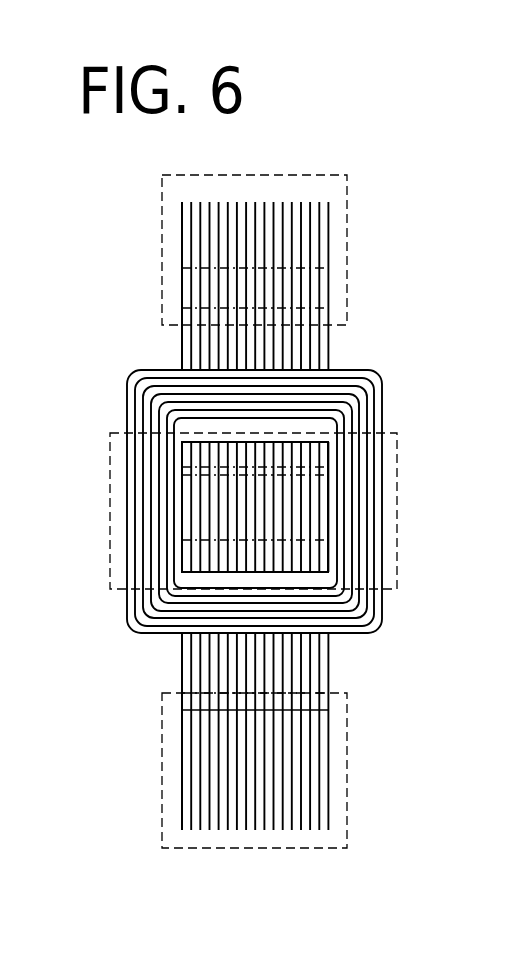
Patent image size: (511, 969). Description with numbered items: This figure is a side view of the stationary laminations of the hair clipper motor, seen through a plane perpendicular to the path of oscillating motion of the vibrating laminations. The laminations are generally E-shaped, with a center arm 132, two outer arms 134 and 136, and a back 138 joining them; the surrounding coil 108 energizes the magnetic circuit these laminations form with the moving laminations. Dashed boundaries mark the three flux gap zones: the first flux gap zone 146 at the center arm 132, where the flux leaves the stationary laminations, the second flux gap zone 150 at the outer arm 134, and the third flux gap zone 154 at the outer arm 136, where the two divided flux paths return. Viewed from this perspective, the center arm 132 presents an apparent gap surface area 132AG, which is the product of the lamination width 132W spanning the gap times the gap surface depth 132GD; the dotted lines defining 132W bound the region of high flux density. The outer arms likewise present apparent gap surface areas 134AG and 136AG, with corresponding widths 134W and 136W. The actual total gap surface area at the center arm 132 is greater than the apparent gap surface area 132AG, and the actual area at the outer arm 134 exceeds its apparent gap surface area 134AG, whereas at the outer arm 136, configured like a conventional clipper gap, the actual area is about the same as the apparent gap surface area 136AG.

The coil 108 is at (352, 612).
The center arm 132 is at (176, 501).
The apparent gap surface area 132AG is at (303, 490).
The lamination width 132W is at (180, 530).
The gap surface depth 132GD is at (236, 573).
The outer arm 134 is at (172, 236).
The apparent gap surface area 134AG is at (292, 246).
The upper array width 134W is at (181, 287).
The outer arm 136 is at (170, 807).
The apparent gap surface area 136AG is at (308, 770).
The lower array width 136W is at (181, 761).
The back 138 is at (192, 675).
The first flux gap zone 146 is at (397, 552).
The second flux gap zone 150 is at (192, 176).
The third flux gap zone 154 is at (348, 828).